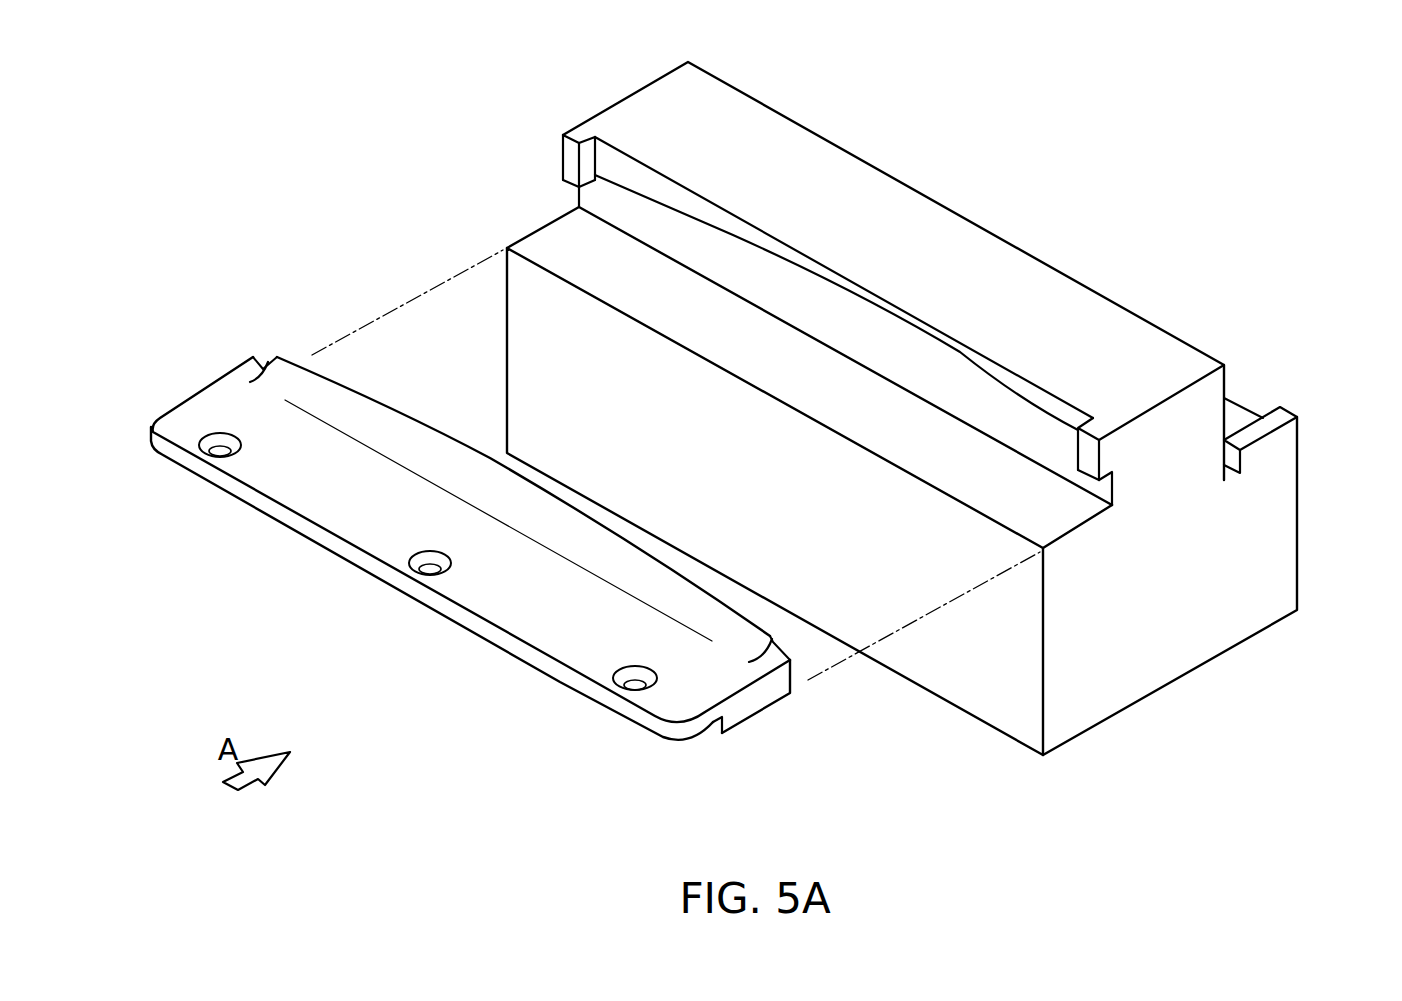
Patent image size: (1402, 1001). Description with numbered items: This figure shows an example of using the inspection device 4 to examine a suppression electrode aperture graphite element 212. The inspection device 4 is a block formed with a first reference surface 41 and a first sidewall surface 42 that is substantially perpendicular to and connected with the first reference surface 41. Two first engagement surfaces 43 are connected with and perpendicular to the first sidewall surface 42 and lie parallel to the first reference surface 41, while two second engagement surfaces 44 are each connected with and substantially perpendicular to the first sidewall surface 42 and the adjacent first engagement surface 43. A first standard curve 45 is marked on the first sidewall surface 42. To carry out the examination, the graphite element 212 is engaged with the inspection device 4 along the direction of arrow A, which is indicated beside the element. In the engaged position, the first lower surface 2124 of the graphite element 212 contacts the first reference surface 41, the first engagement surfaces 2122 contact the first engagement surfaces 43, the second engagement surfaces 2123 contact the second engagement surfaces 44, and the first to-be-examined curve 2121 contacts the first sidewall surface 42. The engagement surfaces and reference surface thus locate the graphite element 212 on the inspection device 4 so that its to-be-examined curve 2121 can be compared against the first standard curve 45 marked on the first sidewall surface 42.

The inspection device 4 is at (1118, 712).
The first reference surface 41 is at (1045, 525).
The first sidewall surface 42 is at (604, 202).
The first engagement surfaces 43 is at (567, 188).
The second engagement surfaces 44 is at (1078, 448).
The first standard curve 45 is at (672, 208).
The suppression electrode aperture graphite element 212 is at (393, 589).
The first to-be-examined curve 2121 is at (393, 412).
The first engagement surfaces 2122 is at (262, 366).
The second engagement surfaces 2123 is at (268, 355).
The first lower surface 2124 is at (735, 728).